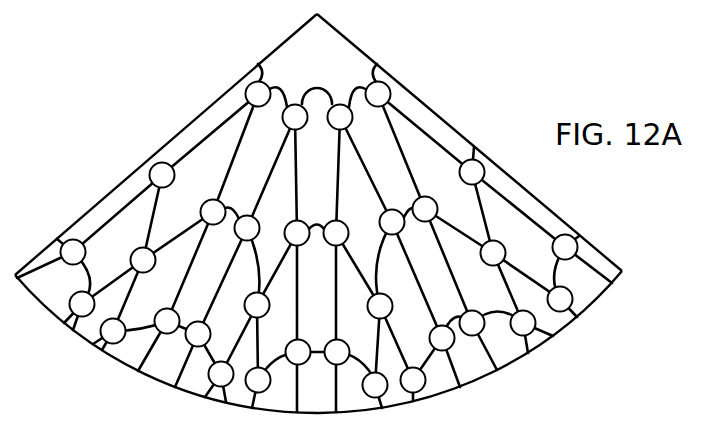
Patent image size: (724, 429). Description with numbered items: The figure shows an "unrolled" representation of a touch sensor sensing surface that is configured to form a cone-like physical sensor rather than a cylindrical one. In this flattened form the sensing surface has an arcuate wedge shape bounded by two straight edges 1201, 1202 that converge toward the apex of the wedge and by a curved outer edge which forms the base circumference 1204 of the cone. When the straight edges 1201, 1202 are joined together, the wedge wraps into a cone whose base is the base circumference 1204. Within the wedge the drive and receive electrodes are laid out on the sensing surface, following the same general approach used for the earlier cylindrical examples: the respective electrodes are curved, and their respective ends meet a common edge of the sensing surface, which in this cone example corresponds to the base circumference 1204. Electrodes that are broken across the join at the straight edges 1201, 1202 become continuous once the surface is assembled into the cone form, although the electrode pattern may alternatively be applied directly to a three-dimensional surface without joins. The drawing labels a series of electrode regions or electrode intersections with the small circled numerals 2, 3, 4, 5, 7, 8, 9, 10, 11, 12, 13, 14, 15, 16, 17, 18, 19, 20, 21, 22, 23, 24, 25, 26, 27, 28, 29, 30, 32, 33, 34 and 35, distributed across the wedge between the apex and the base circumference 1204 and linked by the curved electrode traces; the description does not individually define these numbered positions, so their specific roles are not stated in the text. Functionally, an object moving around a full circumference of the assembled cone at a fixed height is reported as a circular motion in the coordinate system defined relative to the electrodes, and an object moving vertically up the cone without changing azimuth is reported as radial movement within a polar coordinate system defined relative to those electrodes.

The straight edge 1201 is at (441, 119).
The straight edge 1202 is at (175, 137).
The base circumference 1204 is at (484, 376).
The node 2 is at (82, 304).
The node 3 is at (73, 252).
The node 4 is at (565, 247).
The node 5 is at (560, 299).
The node 7 is at (113, 331).
The node 8 is at (143, 260).
The node 9 is at (162, 175).
The node 10 is at (472, 172).
The node 11 is at (493, 253).
The node 12 is at (523, 323).
The node 13 is at (167, 321).
The node 14 is at (213, 212).
The node 15 is at (258, 94).
The node 16 is at (378, 94).
The node 17 is at (425, 209).
The node 18 is at (472, 323).
The node 19 is at (198, 334).
The node 20 is at (247, 228).
The node 21 is at (295, 117).
The node 22 is at (340, 117).
The node 23 is at (392, 222).
The node 24 is at (442, 338).
The node 25 is at (221, 374).
The node 26 is at (257, 305).
The node 27 is at (297, 233).
The node 28 is at (336, 233).
The node 29 is at (380, 306).
The node 30 is at (413, 380).
The node 32 is at (258, 380).
The node 33 is at (298, 352).
The node 34 is at (337, 352).
The node 35 is at (375, 385).